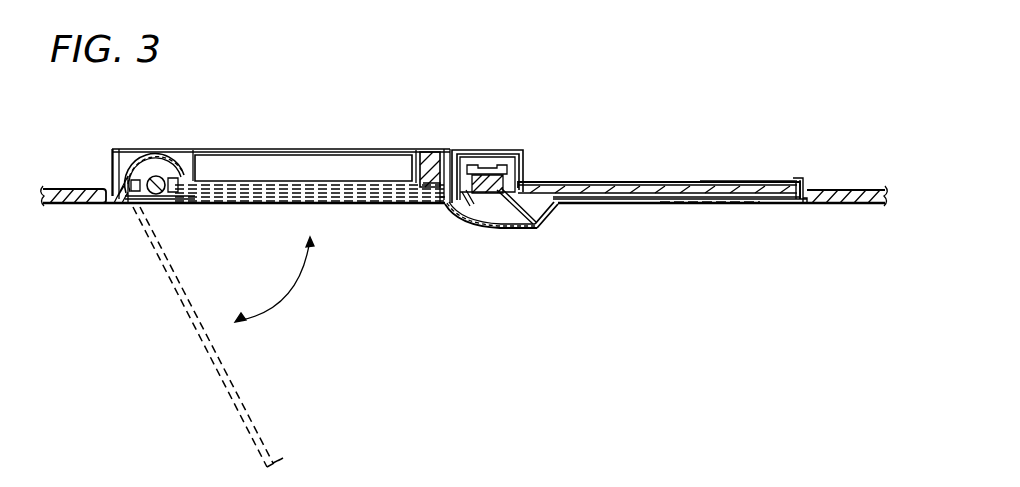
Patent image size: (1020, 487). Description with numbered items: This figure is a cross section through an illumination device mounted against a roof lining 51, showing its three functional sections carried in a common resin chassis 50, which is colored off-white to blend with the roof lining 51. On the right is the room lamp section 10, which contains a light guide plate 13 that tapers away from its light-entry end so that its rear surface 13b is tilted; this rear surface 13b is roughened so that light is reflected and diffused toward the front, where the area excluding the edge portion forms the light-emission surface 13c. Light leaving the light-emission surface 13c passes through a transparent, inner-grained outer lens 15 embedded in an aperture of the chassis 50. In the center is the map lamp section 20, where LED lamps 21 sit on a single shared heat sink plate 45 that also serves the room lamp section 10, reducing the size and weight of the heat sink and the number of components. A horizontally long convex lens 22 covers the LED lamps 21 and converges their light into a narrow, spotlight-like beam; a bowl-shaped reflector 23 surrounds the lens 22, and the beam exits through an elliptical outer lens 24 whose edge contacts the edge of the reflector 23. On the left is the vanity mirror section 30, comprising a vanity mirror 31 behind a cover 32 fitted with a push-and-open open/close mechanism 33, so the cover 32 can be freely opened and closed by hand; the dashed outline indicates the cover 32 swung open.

The room lamp section 10 is at (766, 242).
The light guide plate 13 is at (659, 193).
The rear surface 13b is at (731, 184).
The light-emission surface 13c is at (697, 206).
The outer lens 15 is at (637, 207).
The map lamp section 20 is at (523, 246).
The LED lamps 21 is at (497, 151).
The lens 22 is at (470, 216).
The reflector 23 is at (518, 226).
The outer lens 24 is at (496, 229).
The vanity mirror section 30 is at (277, 308).
The vanity mirror 31 is at (218, 206).
The cover 32 is at (280, 206).
The push-and-open open/close mechanism 33 is at (430, 240).
The heat sink plate 45 is at (487, 163).
The chassis 50 is at (808, 211).
The roof lining 51 is at (78, 206).